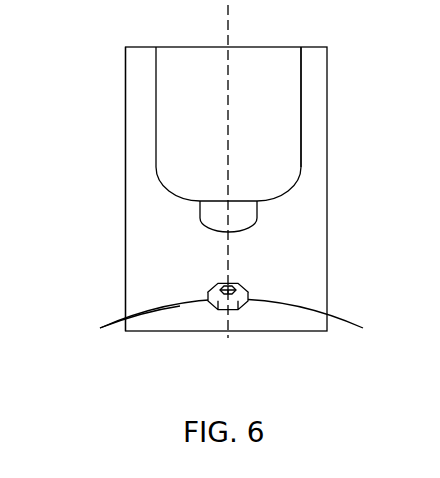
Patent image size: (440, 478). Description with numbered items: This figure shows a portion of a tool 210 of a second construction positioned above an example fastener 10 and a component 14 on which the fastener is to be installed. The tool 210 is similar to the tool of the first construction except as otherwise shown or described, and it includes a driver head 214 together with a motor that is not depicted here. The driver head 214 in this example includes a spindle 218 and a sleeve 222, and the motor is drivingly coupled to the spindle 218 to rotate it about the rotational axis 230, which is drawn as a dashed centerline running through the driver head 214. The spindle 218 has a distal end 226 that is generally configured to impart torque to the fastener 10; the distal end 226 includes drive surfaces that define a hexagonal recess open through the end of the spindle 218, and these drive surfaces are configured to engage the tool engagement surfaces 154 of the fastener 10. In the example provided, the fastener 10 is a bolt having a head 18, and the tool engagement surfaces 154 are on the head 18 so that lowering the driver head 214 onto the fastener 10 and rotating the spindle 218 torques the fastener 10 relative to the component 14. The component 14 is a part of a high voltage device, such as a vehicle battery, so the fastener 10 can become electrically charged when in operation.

The fastener 10 is at (206, 296).
The component 14 is at (140, 228).
The head 18 is at (245, 324).
The tool engagement surfaces 154 is at (119, 324).
The tool 210 is at (126, 78).
The driver head 214 is at (303, 70).
The spindle 218 is at (258, 210).
The sleeve 222 is at (288, 125).
The distal end 226 is at (250, 228).
The rotational axis 230 is at (227, 31).